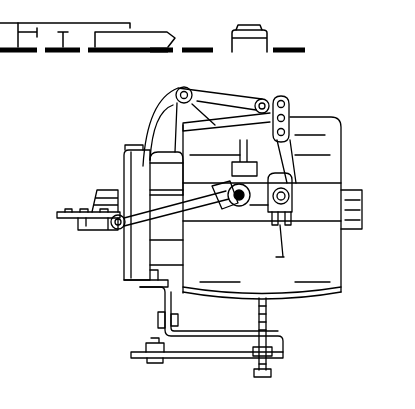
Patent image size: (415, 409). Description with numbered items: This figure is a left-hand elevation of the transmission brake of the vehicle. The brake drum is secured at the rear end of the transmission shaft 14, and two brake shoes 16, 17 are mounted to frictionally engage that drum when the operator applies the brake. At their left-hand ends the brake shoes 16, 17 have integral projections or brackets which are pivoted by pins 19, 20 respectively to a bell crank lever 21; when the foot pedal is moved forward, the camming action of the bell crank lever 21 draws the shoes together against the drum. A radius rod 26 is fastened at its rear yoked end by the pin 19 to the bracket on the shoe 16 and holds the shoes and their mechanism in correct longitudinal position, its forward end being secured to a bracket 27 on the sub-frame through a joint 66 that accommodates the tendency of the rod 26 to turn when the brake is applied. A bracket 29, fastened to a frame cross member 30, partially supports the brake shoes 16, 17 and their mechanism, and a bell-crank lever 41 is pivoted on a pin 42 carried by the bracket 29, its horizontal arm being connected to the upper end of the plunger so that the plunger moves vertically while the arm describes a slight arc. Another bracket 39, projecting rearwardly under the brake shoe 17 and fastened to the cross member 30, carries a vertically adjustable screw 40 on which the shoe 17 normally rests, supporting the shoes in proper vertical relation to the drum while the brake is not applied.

The transmission shaft 14 is at (346, 227).
The brake shoe 16 is at (332, 121).
The brake shoe 17 is at (328, 290).
The pin 19 is at (232, 206).
The pin 20 is at (292, 197).
The bell crank lever 21 is at (292, 163).
The radius rod 26 is at (128, 232).
The bracket 27 is at (68, 210).
The bracket 29 is at (125, 165).
The frame cross member 30 is at (165, 301).
The bracket 39 is at (216, 358).
The vertically adjustable screw 40 is at (272, 374).
The bell-crank lever 41 is at (216, 96).
The pin 42 is at (184, 85).
The joint 66 is at (118, 192).